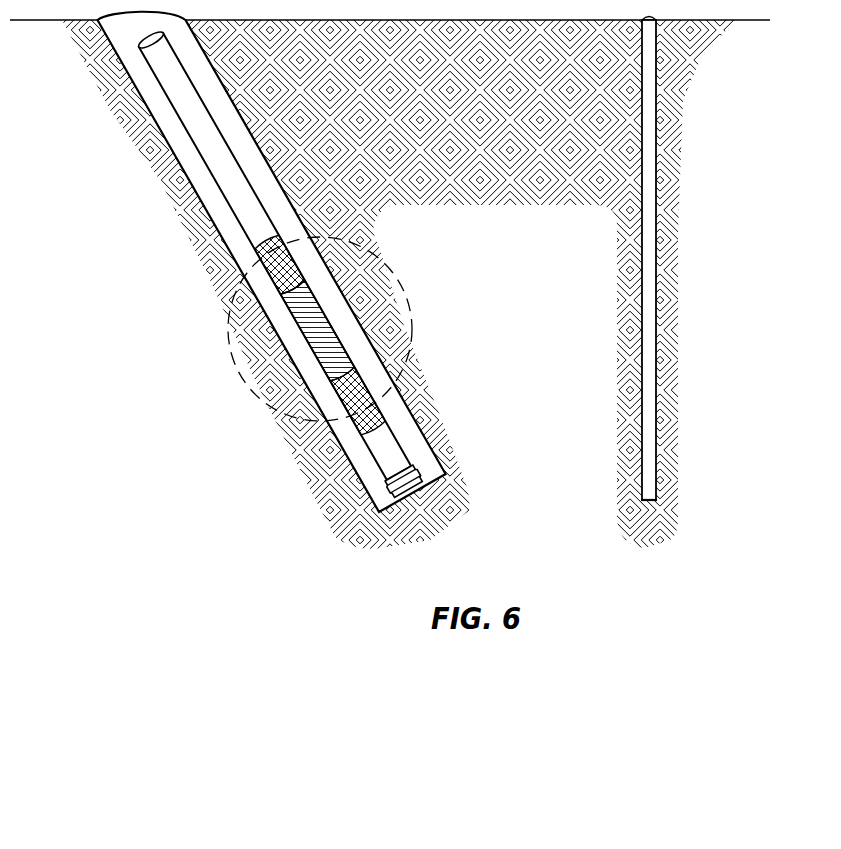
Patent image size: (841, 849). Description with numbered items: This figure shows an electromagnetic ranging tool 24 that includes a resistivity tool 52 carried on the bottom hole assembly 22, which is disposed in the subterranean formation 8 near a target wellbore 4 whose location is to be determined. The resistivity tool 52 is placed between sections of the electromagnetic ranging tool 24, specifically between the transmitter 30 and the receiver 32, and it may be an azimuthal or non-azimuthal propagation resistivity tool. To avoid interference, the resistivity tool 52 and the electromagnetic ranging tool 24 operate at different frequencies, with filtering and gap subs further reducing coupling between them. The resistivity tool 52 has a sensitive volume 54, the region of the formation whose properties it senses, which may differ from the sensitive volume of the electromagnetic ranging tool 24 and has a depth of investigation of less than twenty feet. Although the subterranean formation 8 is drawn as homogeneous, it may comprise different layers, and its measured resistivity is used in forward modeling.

The target wellbore 4 is at (648, 262).
The subterranean formation 8 is at (470, 151).
The bottom hole assembly 22 is at (320, 495).
The electromagnetic ranging tool 24 is at (326, 408).
The transmitter 30 is at (283, 277).
The receiver 32 is at (387, 413).
The resistivity tool 52 is at (333, 337).
The sensitive volume 54 is at (374, 262).